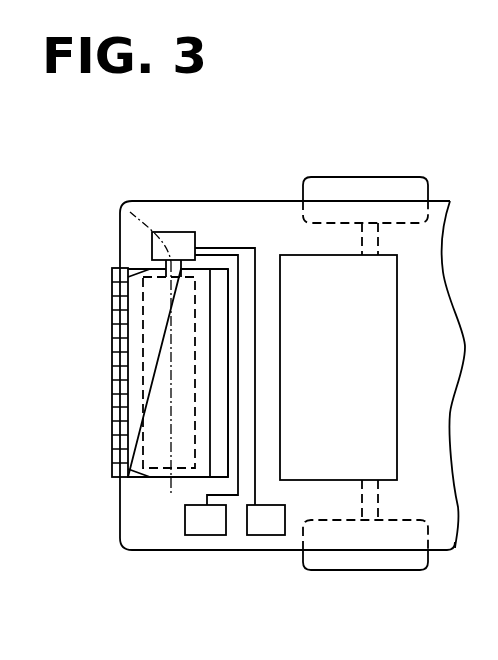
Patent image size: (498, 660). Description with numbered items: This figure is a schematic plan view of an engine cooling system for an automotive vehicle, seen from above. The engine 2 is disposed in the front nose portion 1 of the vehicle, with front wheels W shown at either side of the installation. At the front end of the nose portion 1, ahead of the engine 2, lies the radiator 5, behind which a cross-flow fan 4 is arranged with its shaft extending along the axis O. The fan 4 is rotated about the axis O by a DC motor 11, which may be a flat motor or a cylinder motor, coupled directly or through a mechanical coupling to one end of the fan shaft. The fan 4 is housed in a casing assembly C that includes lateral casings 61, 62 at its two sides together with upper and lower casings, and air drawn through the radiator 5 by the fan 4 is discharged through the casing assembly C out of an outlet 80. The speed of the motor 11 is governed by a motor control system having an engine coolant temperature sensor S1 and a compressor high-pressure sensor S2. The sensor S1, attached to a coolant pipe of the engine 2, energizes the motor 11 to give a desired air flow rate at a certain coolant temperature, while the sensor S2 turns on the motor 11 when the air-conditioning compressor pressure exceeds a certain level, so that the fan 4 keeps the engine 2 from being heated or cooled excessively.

The front nose portion 1 is at (216, 197).
The engine 2 is at (345, 369).
The cross-flow fan 4 is at (148, 413).
The radiator 5 is at (118, 305).
The DC motor 11 is at (182, 242).
The lateral casing 61 is at (135, 268).
The lateral casing 62 is at (140, 478).
The outlet 80 is at (222, 308).
The casing assembly C is at (220, 264).
The axis O is at (127, 201).
The engine coolant temperature sensor S1 is at (203, 535).
The compressor high-pressure sensor S2 is at (263, 535).
The front wheel W is at (378, 188).